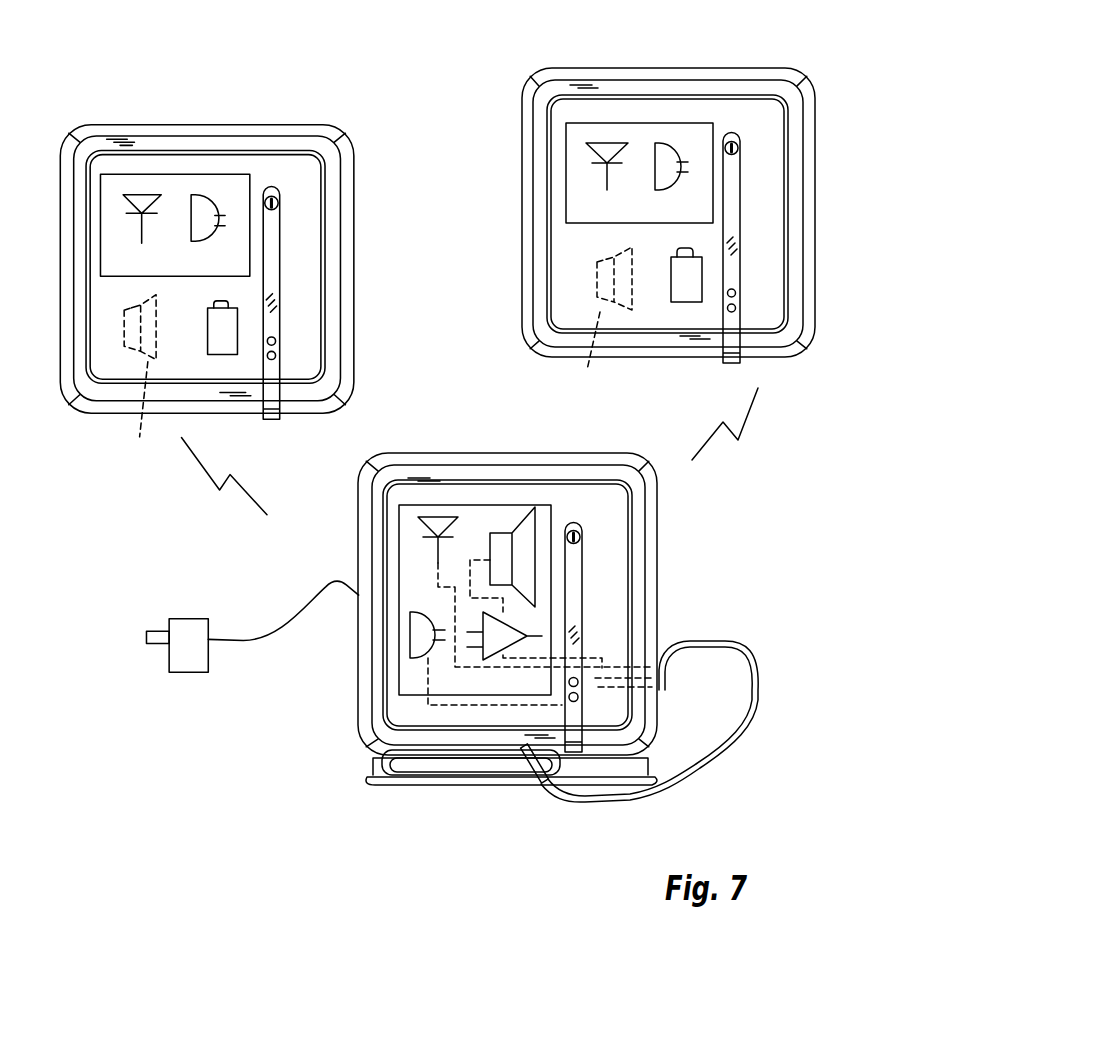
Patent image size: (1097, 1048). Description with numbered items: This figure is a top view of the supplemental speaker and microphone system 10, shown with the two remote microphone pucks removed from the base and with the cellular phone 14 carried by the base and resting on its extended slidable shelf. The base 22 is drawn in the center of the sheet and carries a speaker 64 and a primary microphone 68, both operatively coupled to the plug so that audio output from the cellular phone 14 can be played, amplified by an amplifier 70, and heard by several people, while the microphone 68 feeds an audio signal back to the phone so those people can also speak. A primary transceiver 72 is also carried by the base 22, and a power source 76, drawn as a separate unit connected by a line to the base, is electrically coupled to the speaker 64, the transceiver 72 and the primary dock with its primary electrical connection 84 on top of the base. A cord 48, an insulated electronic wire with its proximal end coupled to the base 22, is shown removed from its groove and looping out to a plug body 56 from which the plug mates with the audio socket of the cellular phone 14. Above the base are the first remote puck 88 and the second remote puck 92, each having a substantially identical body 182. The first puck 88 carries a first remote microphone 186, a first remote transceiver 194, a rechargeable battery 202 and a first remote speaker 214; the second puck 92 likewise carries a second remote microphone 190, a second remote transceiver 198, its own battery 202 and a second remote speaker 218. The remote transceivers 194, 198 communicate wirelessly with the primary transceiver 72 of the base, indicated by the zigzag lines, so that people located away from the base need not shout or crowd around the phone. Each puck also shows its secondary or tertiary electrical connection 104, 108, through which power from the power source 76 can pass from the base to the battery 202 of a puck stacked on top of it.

The supplemental speaker and microphone system 10 is at (288, 738).
The cellular phone 14 is at (410, 768).
The base 22 is at (658, 578).
The cord 48 is at (755, 667).
The plug body 56 is at (527, 782).
The speaker 64 is at (518, 525).
The primary microphone 68 is at (412, 645).
The amplifier 70 is at (487, 657).
The primary transceiver 72 is at (442, 517).
The power source 76 is at (195, 617).
The primary electrical connection 84 is at (580, 697).
The first remote puck 88 is at (160, 118).
The second remote puck 92 is at (688, 55).
The secondary electrical connection 104 is at (268, 332).
The tertiary electrical connection 108 is at (733, 293).
The body 182 is at (347, 213).
The first remote microphone 186 is at (205, 193).
The second remote microphone 190 is at (673, 145).
The first remote transceiver 194 is at (133, 185).
The second remote transceiver 198 is at (588, 148).
The rechargeable battery 202 is at (217, 337).
The first remote speaker 214 is at (126, 380).
The second remote speaker 218 is at (605, 326).